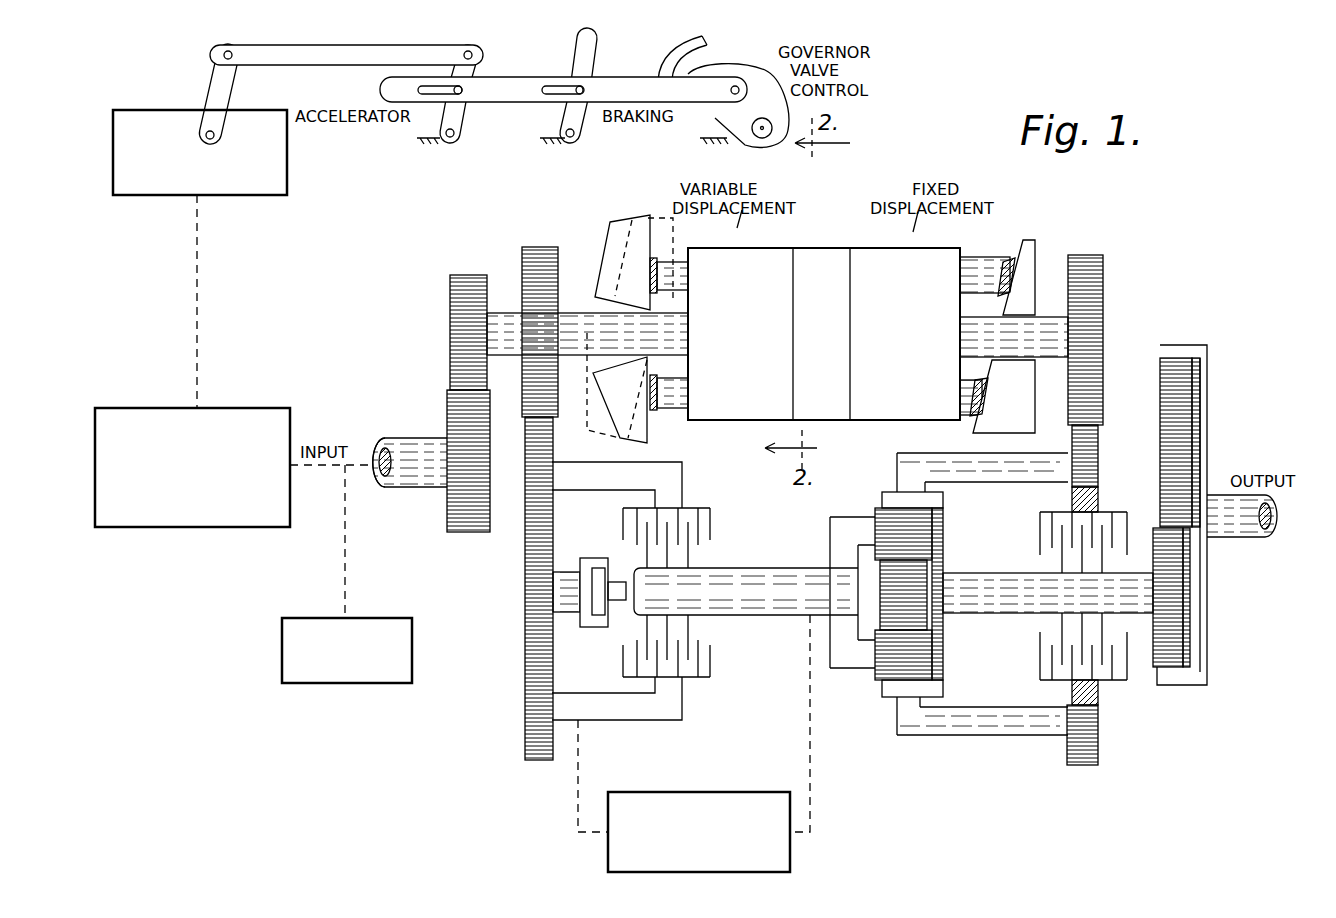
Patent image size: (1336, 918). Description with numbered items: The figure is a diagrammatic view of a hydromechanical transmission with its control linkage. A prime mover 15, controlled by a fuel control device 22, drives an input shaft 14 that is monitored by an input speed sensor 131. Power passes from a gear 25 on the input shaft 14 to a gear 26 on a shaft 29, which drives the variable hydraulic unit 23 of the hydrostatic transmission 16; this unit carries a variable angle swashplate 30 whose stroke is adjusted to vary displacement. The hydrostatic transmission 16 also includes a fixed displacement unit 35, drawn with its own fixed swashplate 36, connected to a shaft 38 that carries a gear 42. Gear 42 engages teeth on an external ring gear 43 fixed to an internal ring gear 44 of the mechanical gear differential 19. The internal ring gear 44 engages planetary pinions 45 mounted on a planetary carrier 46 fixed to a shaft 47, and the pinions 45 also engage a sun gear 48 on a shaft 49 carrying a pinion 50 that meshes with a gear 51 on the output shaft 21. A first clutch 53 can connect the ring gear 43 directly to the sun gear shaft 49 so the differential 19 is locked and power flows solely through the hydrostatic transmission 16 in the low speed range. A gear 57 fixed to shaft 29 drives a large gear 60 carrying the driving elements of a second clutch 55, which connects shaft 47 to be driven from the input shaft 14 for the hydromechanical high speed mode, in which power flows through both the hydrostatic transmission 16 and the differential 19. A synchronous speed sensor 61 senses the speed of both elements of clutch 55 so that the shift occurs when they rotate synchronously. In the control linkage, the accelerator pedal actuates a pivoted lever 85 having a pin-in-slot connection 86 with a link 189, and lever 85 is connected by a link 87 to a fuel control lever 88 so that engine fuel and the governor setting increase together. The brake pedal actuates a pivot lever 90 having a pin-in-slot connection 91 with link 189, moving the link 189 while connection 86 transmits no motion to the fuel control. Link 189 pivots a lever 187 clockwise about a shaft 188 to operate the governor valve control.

The input shaft 14 is at (400, 472).
The prime mover 15 is at (252, 400).
The hydrostatic transmission 16 is at (835, 288).
The mechanical gear differential 19 is at (1045, 783).
The output shaft 21 is at (1245, 530).
The fuel control device 22 is at (296, 180).
The variable hydraulic unit 23 is at (766, 244).
The gear 25 is at (452, 530).
The gear 26 is at (450, 300).
The shaft 29 is at (500, 313).
The variable angle swashplate 30 is at (612, 238).
The fixed displacement unit 35 is at (938, 246).
The fixed swash plate 36 is at (1030, 257).
The shaft 38 is at (1045, 318).
The gear 42 is at (1093, 272).
The external ring gear 43 is at (1085, 468).
The internal ring gear 44 is at (880, 492).
The planetary pinions 45 is at (920, 540).
The planetary carrier 46 is at (843, 525).
The shaft 47 is at (760, 570).
The sun gear 48 is at (905, 608).
The shaft 49 is at (990, 614).
The pinion 50 is at (1178, 625).
The gear 51 is at (1180, 438).
The first clutch 53 is at (1116, 707).
The second clutch 55 is at (670, 742).
The gear 57 is at (540, 250).
The large gear 60 is at (525, 564).
The synchronous speed sensor 61 is at (596, 645).
The pivoted lever 85 is at (472, 76).
The pin-in-slot connection 86 is at (458, 95).
The link 87 is at (252, 62).
The fuel control lever 88 is at (215, 78).
The pivot lever 90 is at (580, 56).
The pin-in-slot connection 91 is at (576, 94).
The input speed sensor 131 is at (401, 695).
The pivoted lever 187 is at (725, 108).
The shaft 188 is at (755, 142).
The link 189 is at (628, 84).